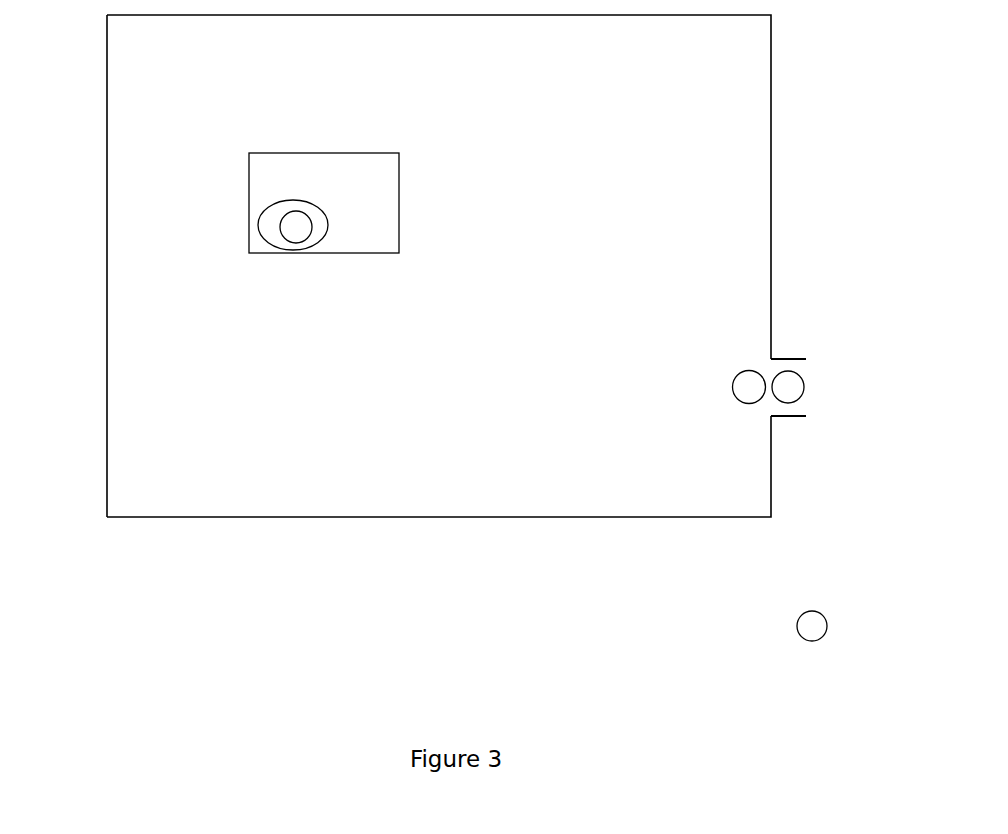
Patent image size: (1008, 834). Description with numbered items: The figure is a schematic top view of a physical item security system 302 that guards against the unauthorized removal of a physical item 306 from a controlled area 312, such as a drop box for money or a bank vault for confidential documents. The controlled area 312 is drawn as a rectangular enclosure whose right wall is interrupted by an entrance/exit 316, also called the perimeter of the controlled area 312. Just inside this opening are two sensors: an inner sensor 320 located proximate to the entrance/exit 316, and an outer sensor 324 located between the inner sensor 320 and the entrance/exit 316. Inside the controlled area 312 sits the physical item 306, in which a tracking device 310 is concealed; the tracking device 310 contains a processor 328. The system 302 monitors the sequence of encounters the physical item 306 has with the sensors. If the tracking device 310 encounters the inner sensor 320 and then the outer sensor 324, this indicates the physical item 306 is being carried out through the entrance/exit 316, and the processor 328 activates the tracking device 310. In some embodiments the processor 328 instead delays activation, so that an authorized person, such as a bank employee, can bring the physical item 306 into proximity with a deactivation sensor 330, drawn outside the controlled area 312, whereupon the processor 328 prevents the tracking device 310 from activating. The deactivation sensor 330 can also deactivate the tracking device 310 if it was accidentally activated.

The physical item security system 302 is at (600, 118).
The physical item 306 is at (249, 162).
The tracking device 310 is at (258, 227).
The controlled area 312 is at (107, 436).
The entrance/exit 316 is at (799, 338).
The inner sensor 320 is at (733, 388).
The outer sensor 324 is at (777, 398).
The processor 328 is at (308, 219).
The deactivation sensor 330 is at (797, 628).